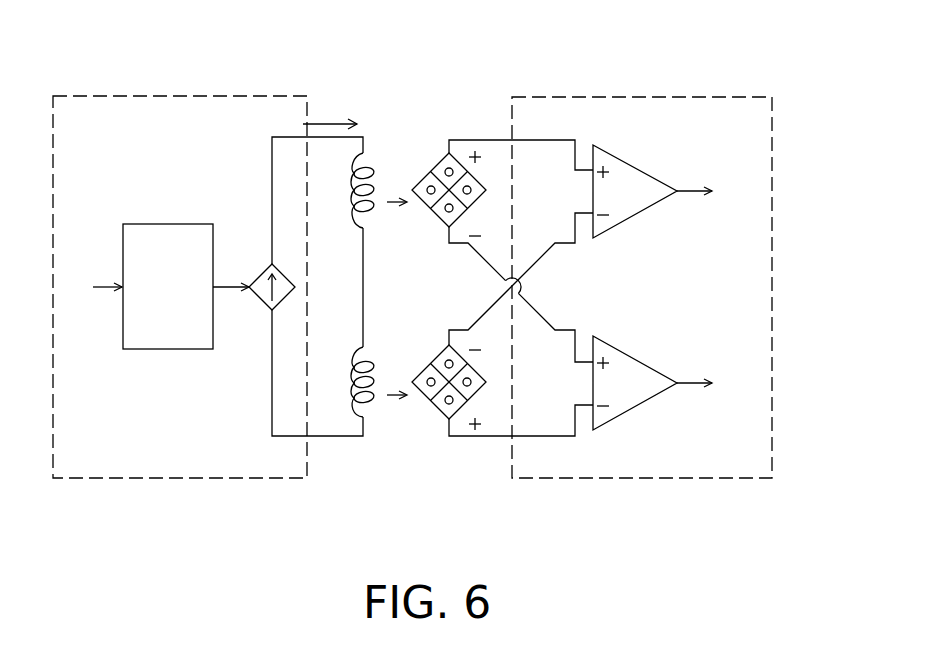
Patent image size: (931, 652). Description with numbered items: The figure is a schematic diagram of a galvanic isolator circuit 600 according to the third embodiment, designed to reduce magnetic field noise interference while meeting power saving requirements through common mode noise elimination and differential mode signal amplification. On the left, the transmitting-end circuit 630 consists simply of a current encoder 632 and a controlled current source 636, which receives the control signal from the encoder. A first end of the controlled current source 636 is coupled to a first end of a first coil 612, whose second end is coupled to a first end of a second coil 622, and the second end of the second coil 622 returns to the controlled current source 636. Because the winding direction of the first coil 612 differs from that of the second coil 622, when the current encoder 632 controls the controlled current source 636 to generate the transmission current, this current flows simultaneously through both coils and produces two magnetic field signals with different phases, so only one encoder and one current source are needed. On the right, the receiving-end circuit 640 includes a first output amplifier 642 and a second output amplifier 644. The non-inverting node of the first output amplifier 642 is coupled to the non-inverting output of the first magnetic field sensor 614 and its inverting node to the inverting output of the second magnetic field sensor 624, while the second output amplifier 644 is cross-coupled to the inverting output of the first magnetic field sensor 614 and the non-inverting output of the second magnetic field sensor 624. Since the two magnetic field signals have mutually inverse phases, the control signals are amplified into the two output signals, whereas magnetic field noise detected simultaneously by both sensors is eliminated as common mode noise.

The galvanic isolator circuit 600 is at (750, 564).
The transmitting-end circuit 630 is at (130, 95).
The current encoder 632 is at (189, 223).
The controlled current source 636 is at (256, 298).
The first coil 612 is at (373, 169).
The second coil 622 is at (373, 364).
The first magnetic field sensor 614 is at (442, 168).
The second magnetic field sensor 624 is at (442, 360).
The receiving-end circuit 640 is at (590, 95).
The first output amplifier 642 is at (637, 168).
The second output amplifier 644 is at (637, 360).